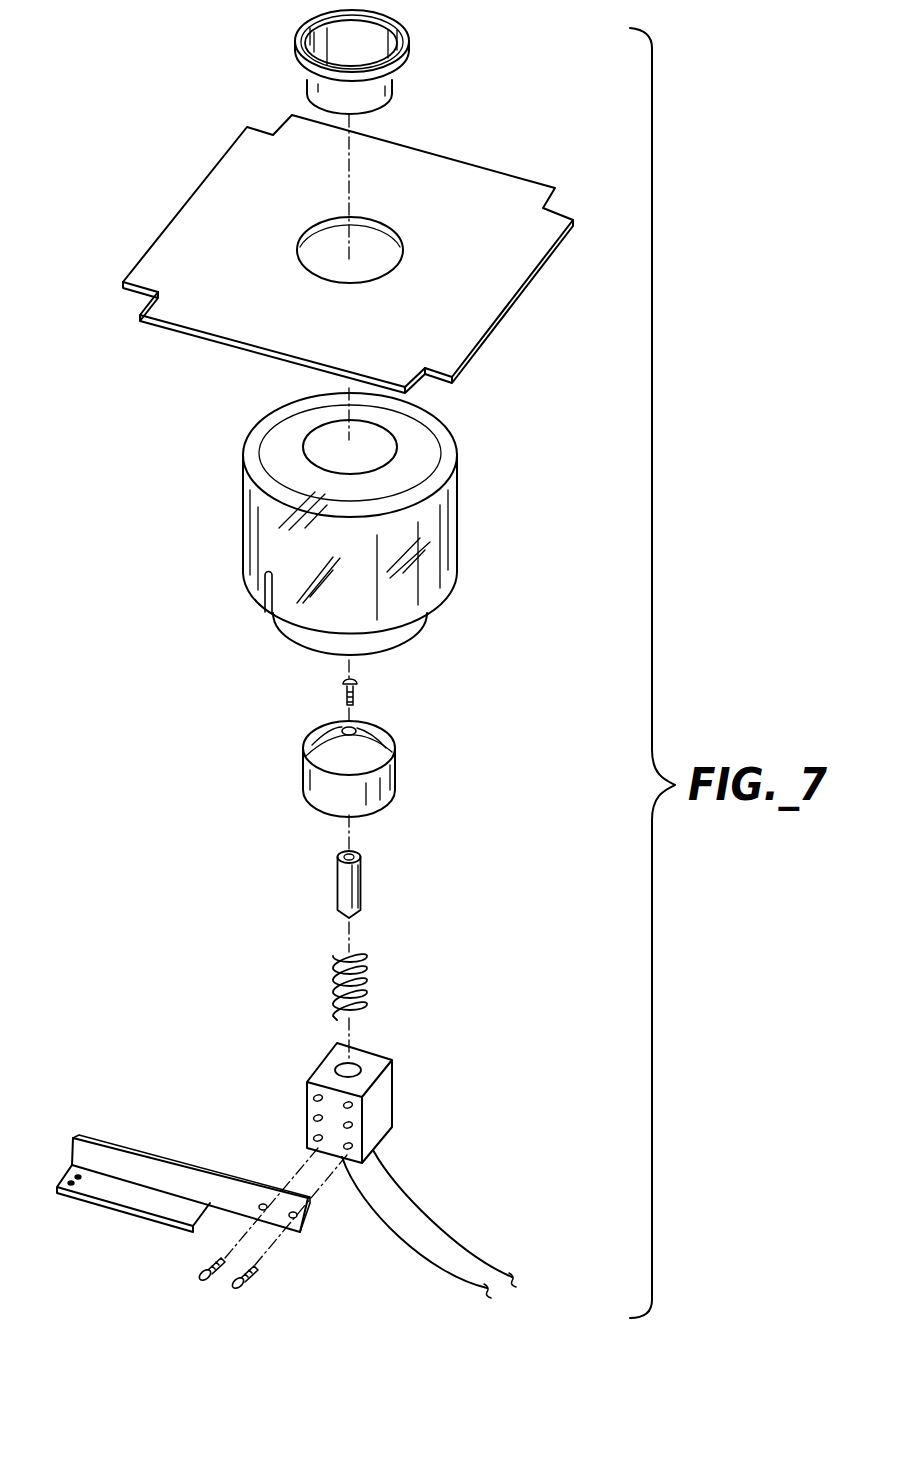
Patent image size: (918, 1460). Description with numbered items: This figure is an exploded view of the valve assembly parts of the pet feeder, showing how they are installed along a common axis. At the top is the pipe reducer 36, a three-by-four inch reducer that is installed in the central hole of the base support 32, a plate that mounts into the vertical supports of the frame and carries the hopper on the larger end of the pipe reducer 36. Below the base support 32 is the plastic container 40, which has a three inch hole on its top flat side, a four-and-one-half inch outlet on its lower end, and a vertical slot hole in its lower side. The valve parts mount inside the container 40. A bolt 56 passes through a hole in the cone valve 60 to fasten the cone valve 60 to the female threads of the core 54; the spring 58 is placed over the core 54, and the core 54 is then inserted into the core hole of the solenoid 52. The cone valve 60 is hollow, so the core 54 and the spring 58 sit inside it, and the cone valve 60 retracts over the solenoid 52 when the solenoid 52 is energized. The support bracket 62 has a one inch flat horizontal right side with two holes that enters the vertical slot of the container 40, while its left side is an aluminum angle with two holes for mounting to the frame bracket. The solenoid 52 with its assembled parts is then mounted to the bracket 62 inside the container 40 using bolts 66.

The base support 32 is at (215, 338).
The pipe reducer 36 is at (295, 43).
The plastic container 40 is at (458, 523).
The solenoid 52 is at (320, 1063).
The core 54 is at (362, 892).
The bolt 56 is at (358, 691).
The spring 58 is at (368, 977).
The cone valve 60 is at (398, 773).
The support bracket 62 is at (198, 1165).
The bolts 66 is at (245, 1289).